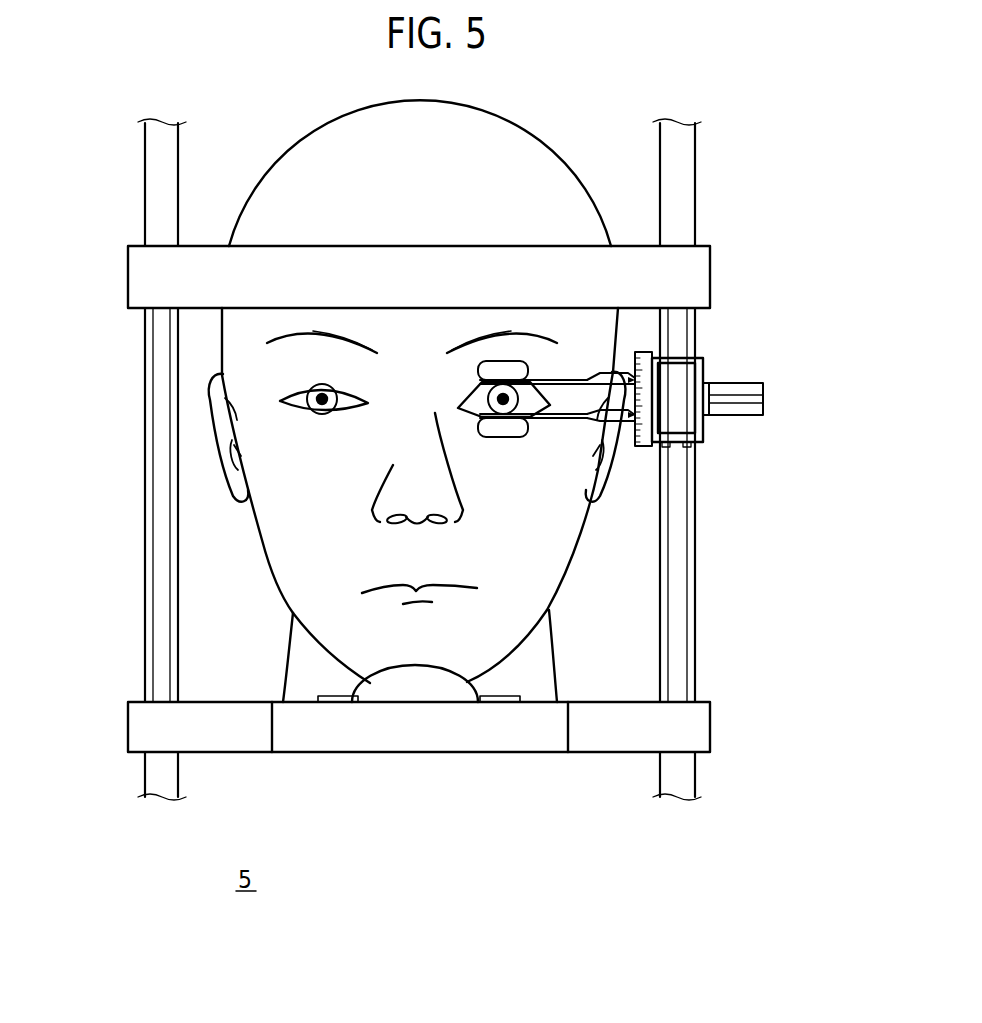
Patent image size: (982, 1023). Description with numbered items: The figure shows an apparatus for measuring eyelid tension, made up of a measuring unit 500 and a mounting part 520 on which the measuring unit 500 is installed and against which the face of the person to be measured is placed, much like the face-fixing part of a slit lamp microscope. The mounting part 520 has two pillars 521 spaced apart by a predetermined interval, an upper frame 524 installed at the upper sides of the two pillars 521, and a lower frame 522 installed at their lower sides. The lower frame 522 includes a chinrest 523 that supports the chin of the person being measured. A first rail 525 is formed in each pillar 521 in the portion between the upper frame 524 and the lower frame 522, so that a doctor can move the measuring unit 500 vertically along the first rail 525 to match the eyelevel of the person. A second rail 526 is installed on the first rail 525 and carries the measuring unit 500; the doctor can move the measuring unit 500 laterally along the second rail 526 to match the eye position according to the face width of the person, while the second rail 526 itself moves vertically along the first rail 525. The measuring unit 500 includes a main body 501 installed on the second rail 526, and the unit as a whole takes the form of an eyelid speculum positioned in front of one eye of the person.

The measuring unit 500 is at (722, 462).
The main body 501 is at (698, 360).
The mounting part 520 is at (722, 612).
The pillars 521 is at (160, 192).
The lower frame 522 is at (500, 730).
The chinrest 523 is at (415, 688).
The upper frame 524 is at (160, 278).
The first rail 525 is at (160, 560).
The second rail 526 is at (738, 385).